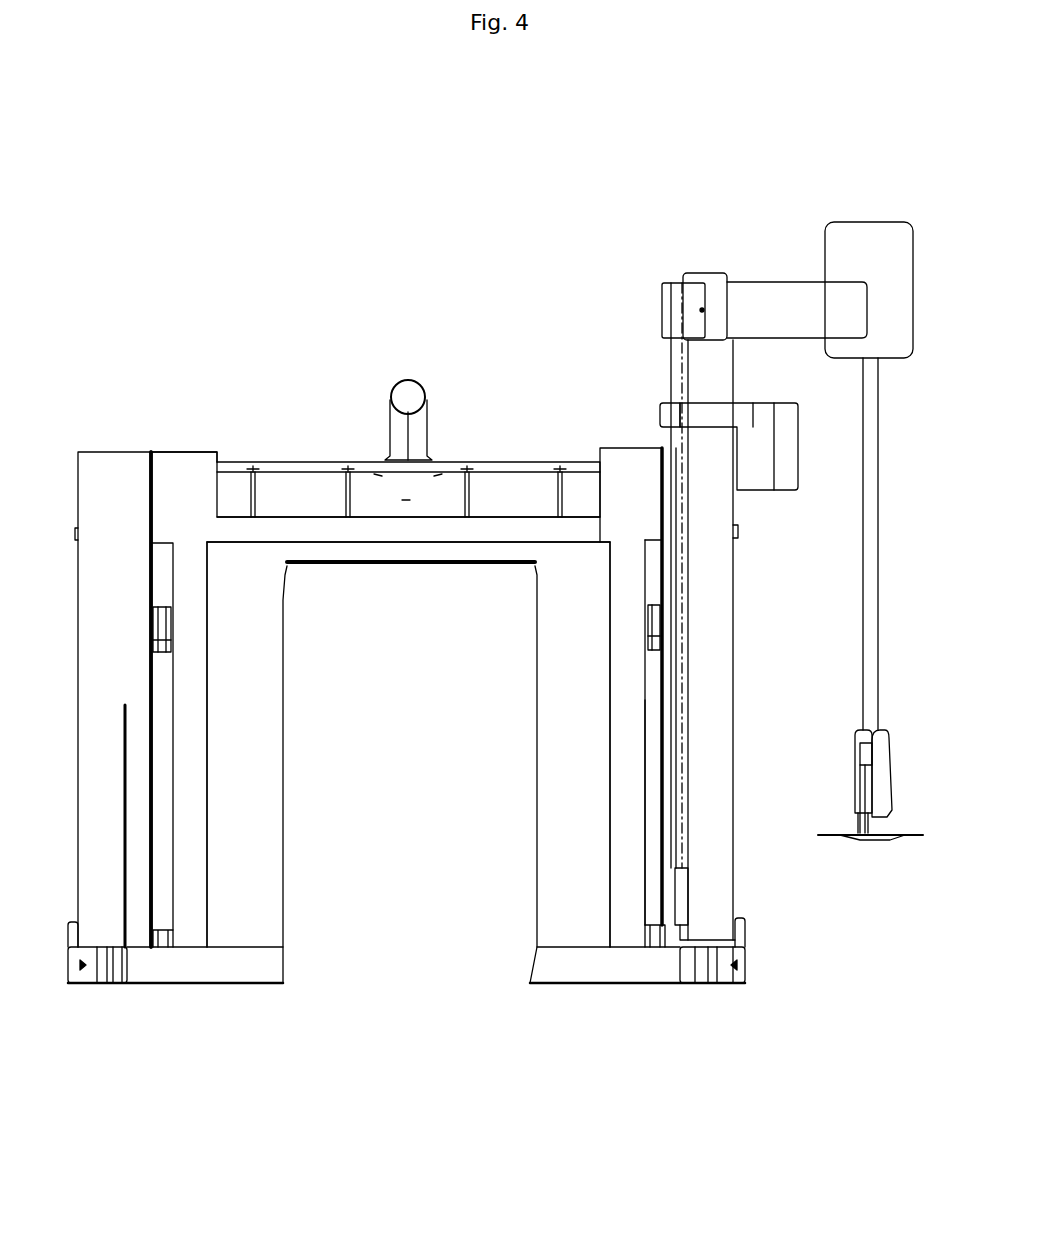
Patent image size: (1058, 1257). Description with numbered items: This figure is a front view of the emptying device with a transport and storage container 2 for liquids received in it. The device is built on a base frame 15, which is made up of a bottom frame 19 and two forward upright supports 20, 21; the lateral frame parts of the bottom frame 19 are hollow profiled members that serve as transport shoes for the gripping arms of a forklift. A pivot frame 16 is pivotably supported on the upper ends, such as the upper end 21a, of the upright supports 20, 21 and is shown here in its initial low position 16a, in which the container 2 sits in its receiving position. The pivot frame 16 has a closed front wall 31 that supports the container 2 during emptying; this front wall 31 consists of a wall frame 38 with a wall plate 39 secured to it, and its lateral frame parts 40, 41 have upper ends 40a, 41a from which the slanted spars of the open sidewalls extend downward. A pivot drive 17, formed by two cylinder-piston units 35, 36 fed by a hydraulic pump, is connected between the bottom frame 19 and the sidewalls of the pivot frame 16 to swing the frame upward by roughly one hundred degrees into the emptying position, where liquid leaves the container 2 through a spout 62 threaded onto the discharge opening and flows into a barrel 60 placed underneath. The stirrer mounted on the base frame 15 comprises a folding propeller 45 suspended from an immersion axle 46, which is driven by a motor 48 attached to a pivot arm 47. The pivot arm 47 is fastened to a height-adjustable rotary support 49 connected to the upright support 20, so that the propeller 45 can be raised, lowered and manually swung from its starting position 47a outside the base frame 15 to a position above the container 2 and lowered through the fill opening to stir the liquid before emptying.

The transport and storage container 2 is at (300, 490).
The base frame 15 is at (203, 990).
The pivot frame 16 is at (625, 788).
The initial low position 16a is at (193, 772).
The pivot drive 17 is at (150, 798).
The bottom frame 19 is at (633, 962).
The forward upright support 20 is at (663, 527).
The forward upright support 21 is at (123, 500).
The upper end of upright support 21a is at (138, 467).
The front wall 31 is at (245, 588).
The cylinder-piston unit 35 is at (653, 808).
The cylinder-piston unit 36 is at (158, 745).
The wall frame 38 is at (327, 530).
The wall plate 39 is at (233, 687).
The lateral frame part of front wall 40 is at (633, 665).
The upper end of lateral frame part 40a is at (632, 467).
The lateral frame part of front wall 41 is at (190, 597).
The upper end of lateral frame part 41a is at (178, 468).
The folding propeller 45 is at (878, 798).
The immersion axle 46 is at (862, 577).
The pivot arm 47 is at (760, 297).
The starting position of pivot arm 47a is at (797, 307).
The motor 48 is at (893, 240).
The rotary support 49 is at (712, 288).
The barrel 60 is at (333, 930).
The spout 62 is at (410, 392).